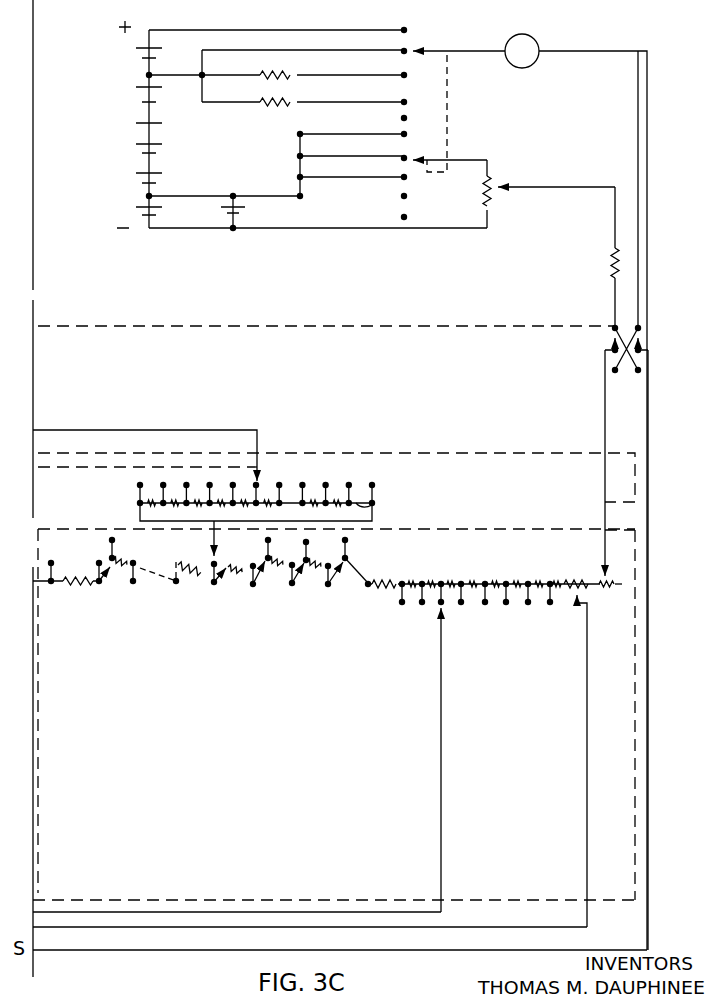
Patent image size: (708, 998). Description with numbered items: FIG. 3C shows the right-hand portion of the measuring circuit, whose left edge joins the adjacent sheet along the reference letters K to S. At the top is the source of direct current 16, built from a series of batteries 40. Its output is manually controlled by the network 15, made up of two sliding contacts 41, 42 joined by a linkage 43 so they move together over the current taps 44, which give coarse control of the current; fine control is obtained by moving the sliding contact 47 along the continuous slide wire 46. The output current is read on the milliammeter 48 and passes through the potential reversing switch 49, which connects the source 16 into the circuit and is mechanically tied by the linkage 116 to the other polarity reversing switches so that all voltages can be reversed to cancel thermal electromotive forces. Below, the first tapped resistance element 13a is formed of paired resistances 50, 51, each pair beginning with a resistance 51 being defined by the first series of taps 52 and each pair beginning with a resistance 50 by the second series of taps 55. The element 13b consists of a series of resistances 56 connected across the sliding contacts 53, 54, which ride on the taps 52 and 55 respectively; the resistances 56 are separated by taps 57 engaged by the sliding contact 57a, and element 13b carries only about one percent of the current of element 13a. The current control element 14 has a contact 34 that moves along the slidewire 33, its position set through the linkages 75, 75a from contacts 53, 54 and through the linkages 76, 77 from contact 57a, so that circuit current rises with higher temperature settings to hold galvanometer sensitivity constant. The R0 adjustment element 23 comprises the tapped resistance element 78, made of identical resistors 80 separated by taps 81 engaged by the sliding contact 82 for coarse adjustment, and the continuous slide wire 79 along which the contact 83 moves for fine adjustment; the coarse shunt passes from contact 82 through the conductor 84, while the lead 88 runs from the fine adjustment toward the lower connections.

The first tapped resistance element 13a is at (245, 593).
The tapped resistance element 13b is at (386, 496).
The current control element 14 is at (594, 516).
The network 15 is at (427, 46).
The source of direct current 16 is at (133, 155).
The R0 adjustment element 23 is at (471, 626).
The slidewire 33 is at (617, 586).
The contact 34 is at (604, 540).
The batteries 40 is at (163, 150).
The sliding contact 41 is at (472, 54).
The sliding contact 42 is at (462, 161).
The linkage 43 is at (450, 129).
The current taps 44 is at (350, 50).
The continuous slide wire 46 is at (486, 197).
The sliding contact 47 is at (547, 187).
The milliammeter 48 is at (533, 39).
The potential reversing switch 49 is at (642, 344).
The resistances 50 is at (328, 588).
The resistances 51 is at (292, 587).
The first series of taps 52 is at (282, 562).
The sliding contact 53 is at (258, 521).
The sliding contact 54 is at (266, 555).
The second series of taps 55 is at (347, 559).
The resistances 56 is at (371, 487).
The taps 57 is at (350, 483).
The sliding contact 57a is at (258, 447).
The linkage 75 is at (343, 898).
The linkage 75a is at (40, 670).
The mechanical linkage 76 is at (550, 452).
The mechanical linkage 77 is at (45, 468).
The tapped resistance element 78 is at (449, 578).
The continuous slide wire 79 is at (588, 581).
The individual resistors 80 is at (404, 581).
The tap 81 is at (400, 605).
The sliding contact 82 is at (441, 641).
The contact 83 is at (588, 691).
The conductor 84 is at (218, 906).
The lead 88 is at (497, 926).
The mechanical linkage 116 is at (285, 327).